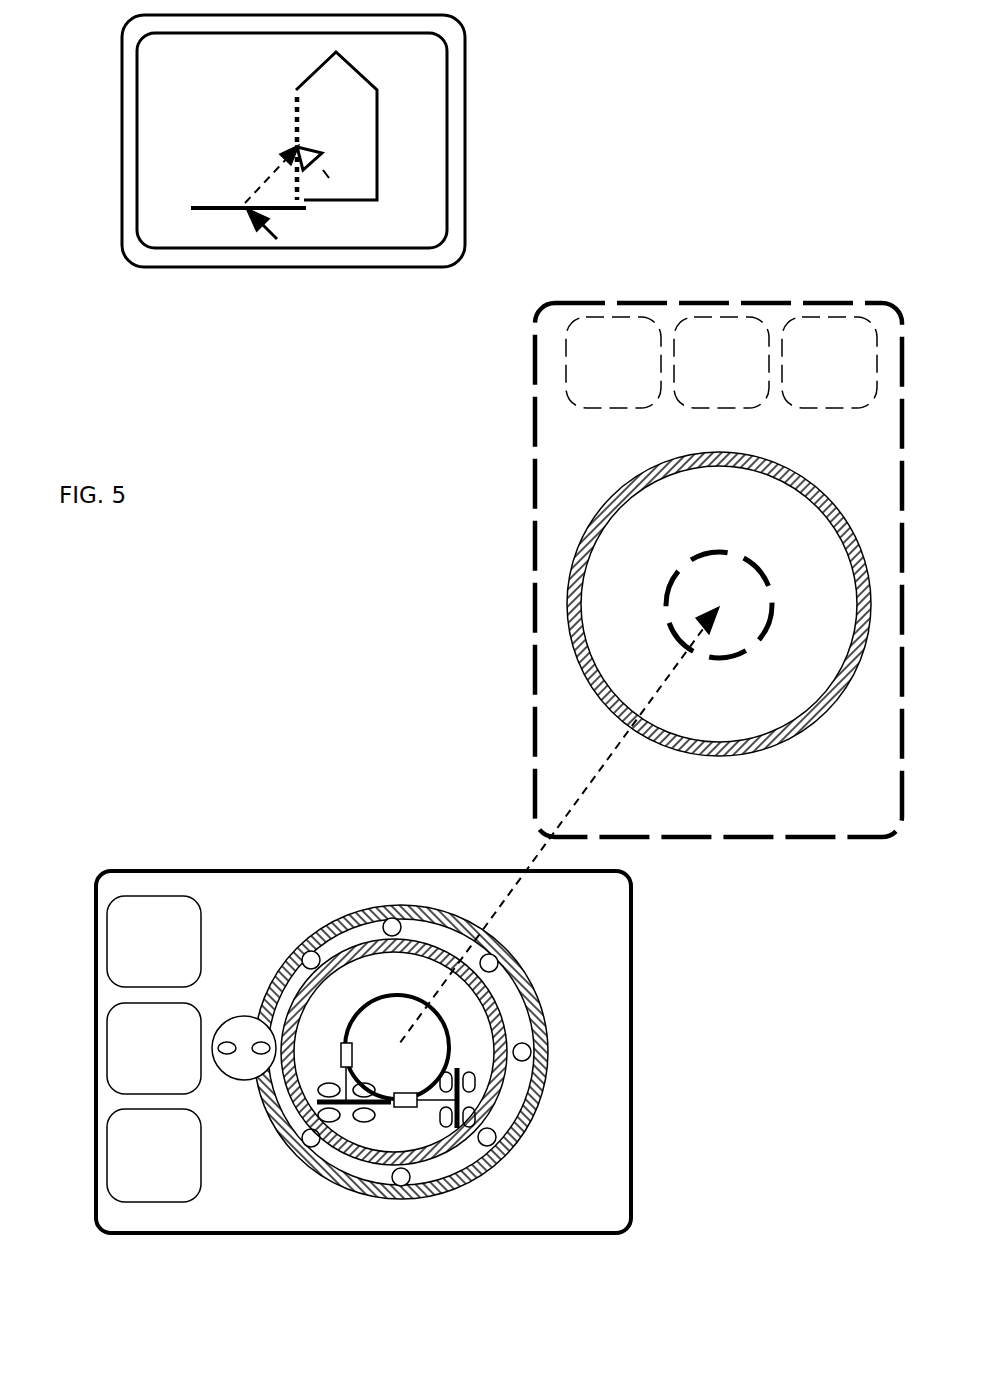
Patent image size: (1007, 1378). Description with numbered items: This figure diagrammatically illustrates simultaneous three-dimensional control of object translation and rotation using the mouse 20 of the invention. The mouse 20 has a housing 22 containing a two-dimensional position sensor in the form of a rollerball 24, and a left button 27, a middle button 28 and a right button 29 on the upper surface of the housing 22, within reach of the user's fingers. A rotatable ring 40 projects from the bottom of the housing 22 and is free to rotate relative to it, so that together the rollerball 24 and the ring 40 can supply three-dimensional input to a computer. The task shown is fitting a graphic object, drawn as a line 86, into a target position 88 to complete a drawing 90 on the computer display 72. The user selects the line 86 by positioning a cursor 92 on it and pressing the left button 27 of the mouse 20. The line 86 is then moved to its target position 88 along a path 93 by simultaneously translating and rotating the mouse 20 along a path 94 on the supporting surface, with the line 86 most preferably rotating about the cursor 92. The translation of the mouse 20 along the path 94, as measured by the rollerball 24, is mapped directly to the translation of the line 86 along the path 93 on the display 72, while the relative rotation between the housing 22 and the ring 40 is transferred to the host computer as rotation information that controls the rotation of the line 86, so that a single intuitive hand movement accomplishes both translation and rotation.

The mouse 20 is at (492, 397).
The housing 22 is at (535, 468).
The rollerball 24 is at (693, 608).
The left button 27 is at (618, 342).
The middle button 28 is at (730, 342).
The right button 29 is at (845, 340).
The ring 40 is at (577, 550).
The path 94 is at (490, 920).
The computer display 72 is at (422, 125).
The line 86 is at (198, 210).
The target position 88 is at (295, 112).
The drawing 90 is at (317, 70).
The cursor 92 is at (265, 230).
The path 93 is at (273, 173).